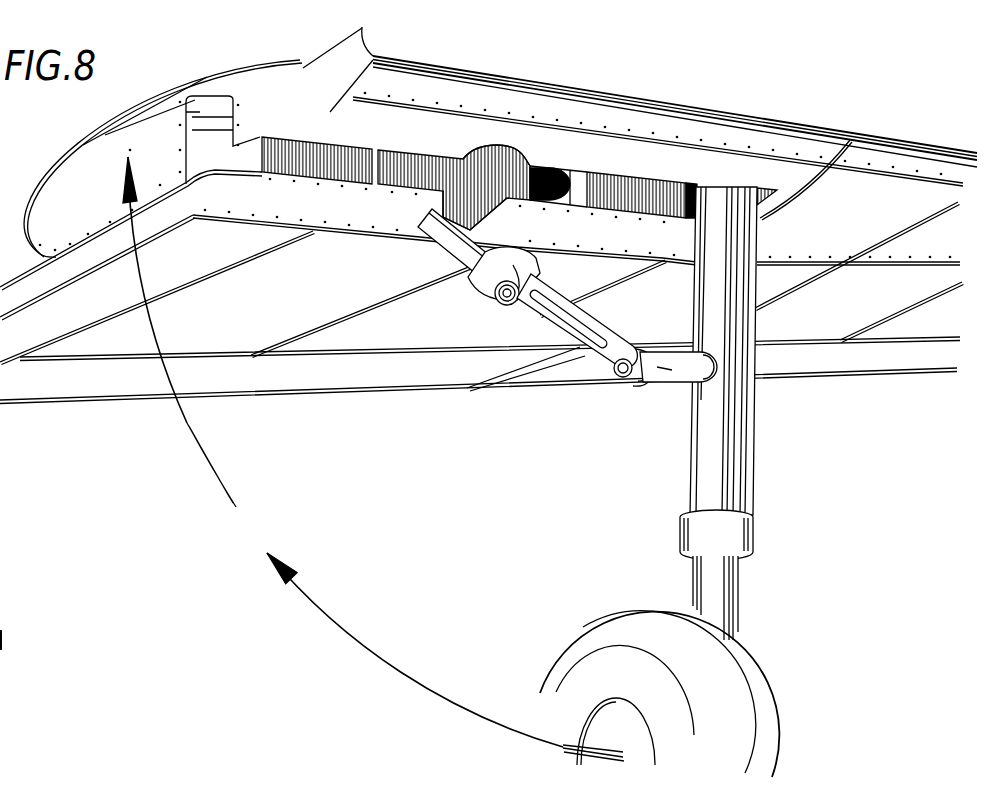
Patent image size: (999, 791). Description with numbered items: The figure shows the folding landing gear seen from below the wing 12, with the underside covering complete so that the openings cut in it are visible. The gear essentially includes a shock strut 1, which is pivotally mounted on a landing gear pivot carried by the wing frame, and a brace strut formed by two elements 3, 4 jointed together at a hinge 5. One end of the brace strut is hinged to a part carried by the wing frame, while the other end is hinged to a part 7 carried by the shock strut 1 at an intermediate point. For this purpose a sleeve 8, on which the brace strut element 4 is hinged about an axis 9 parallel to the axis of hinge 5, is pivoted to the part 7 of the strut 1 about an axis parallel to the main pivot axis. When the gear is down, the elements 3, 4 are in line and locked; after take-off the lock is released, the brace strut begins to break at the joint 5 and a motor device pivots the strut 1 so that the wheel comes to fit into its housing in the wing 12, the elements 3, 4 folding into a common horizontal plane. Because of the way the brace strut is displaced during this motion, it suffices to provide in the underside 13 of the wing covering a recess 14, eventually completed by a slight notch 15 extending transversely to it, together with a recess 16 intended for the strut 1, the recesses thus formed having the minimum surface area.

The shock strut 1 is at (742, 243).
The brace strut element 3 is at (470, 248).
The brace strut element 4 is at (590, 327).
The joint 5 is at (500, 298).
The part carried by the shock strut 7 is at (670, 367).
The sleeve 8 is at (637, 383).
The hinge axis 9 is at (620, 373).
The wing 12 is at (752, 130).
The underside of the wing covering 13 is at (447, 322).
The recess 14 is at (443, 197).
The notch 15 is at (507, 147).
The recess for the strut 16 is at (630, 173).